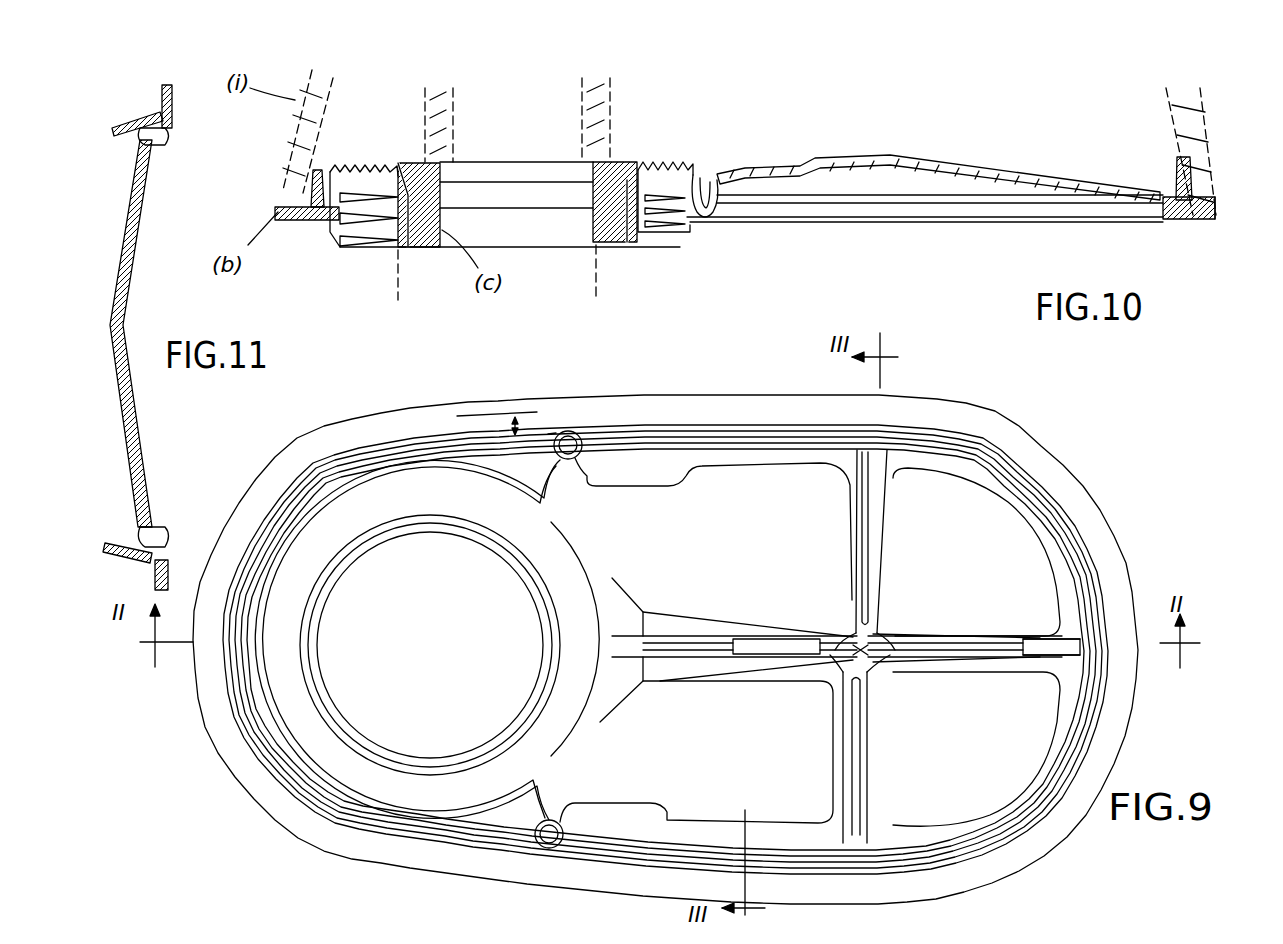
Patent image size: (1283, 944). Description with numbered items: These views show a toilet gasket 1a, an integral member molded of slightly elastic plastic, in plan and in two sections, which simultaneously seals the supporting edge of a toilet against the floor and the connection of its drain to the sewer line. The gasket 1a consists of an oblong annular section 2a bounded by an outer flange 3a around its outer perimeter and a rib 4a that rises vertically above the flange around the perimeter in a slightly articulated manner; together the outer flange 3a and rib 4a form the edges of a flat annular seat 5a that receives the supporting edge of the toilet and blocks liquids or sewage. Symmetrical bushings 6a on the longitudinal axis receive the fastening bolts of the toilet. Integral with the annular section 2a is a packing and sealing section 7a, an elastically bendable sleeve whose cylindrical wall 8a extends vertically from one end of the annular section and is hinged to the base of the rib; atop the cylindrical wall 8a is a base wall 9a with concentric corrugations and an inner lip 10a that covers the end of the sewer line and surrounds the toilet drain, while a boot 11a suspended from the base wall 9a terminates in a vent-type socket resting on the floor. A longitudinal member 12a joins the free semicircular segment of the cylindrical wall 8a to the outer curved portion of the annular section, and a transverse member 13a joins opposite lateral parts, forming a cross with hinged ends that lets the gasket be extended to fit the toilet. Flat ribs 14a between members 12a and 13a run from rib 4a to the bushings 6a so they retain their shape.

In FIG. 9, the gasket 1a is at (1052, 436).
In FIG. 10, the gasket 1a is at (827, 230).
In FIG. 11, the gasket 1a is at (148, 221).
In FIG. 9, the oblong annular section 2a is at (1084, 516).
In FIG. 10, the oblong annular section 2a is at (1195, 222).
In FIG. 11, the oblong annular section 2a is at (174, 110).
In FIG. 9, the outer flange 3a is at (503, 413).
In FIG. 10, the outer flange 3a is at (1207, 212).
In FIG. 11, the outer flange 3a is at (164, 86).
In FIG. 9, the rib 4a is at (1090, 579).
In FIG. 10, the rib 4a is at (322, 170).
In FIG. 11, the rib 4a is at (120, 124).
In FIG. 9, the flat annular seat 5a is at (555, 435).
In FIG. 10, the flat annular seat 5a is at (290, 222).
In FIG. 9, the bushings 6a is at (584, 440).
In FIG. 9, the packing and sealing section 7a is at (506, 560).
In FIG. 10, the packing and sealing section 7a is at (675, 193).
In FIG. 10, the cylindrical wall 8a is at (360, 168).
In FIG. 10, the base wall 9a is at (432, 165).
In FIG. 10, the inner lip 10a is at (646, 190).
In FIG. 10, the boot 11a is at (680, 224).
In FIG. 9, the longitudinal member 12a is at (675, 613).
In FIG. 9, the transverse member 13a is at (883, 577).
In FIG. 9, the flat ribs 14a is at (750, 468).